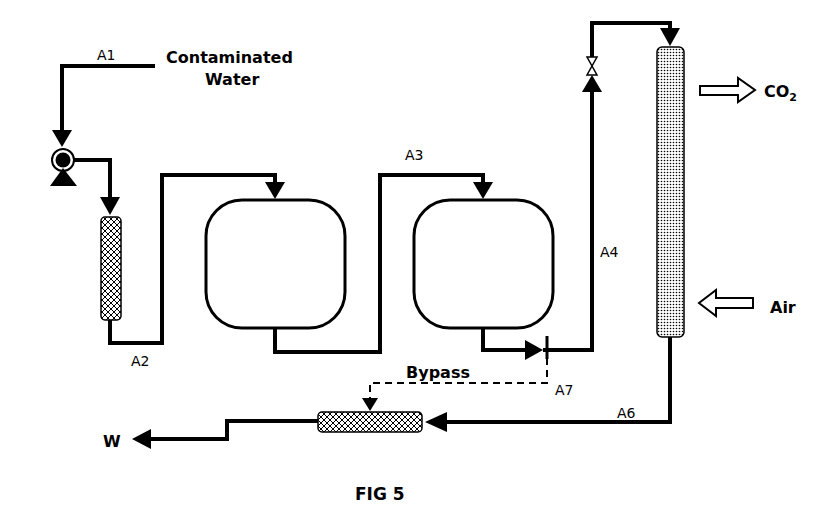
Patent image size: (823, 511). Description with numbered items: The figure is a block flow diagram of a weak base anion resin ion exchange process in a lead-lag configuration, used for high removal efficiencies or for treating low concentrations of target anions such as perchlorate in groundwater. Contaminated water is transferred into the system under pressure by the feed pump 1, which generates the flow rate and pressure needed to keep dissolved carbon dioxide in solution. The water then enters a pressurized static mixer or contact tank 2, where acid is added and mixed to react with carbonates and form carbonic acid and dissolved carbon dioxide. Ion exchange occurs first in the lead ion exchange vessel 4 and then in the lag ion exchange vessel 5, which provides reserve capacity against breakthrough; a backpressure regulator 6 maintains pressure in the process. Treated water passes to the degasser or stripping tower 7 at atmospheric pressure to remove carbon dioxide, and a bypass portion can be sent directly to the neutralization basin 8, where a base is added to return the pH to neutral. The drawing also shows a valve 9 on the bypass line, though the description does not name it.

The feed pump 1 is at (48, 157).
The pressurized static mixer or contact tank 2 is at (124, 268).
The lead ion exchange vessel 4 is at (350, 262).
The lag ion exchange vessel 5 is at (558, 262).
The backpressure regulator 6 is at (576, 66).
The degasser or stripping tower 7 is at (654, 193).
The static mixer or mixing tank (neutralization basin) 8 is at (352, 410).
The valve 9 is at (550, 338).